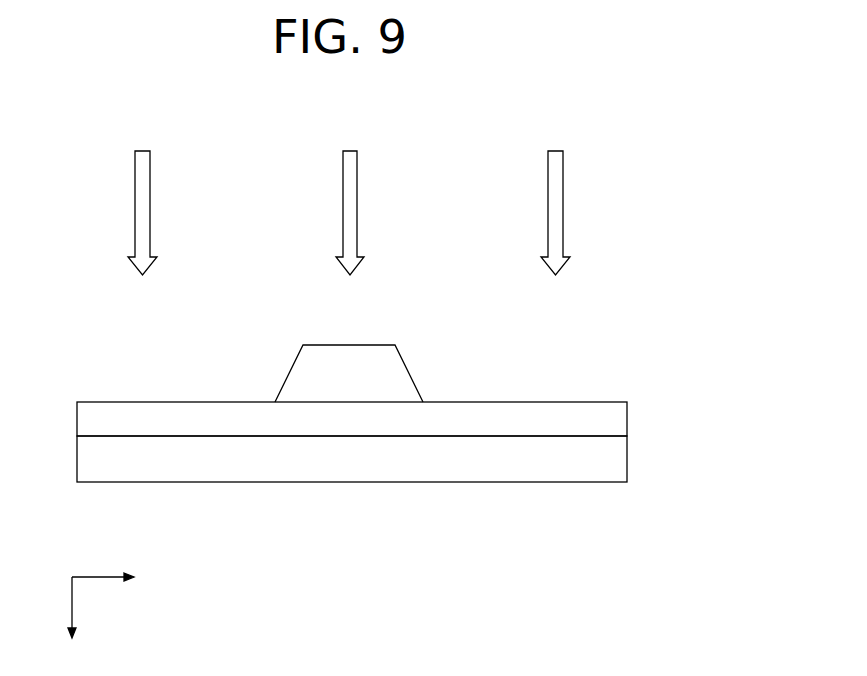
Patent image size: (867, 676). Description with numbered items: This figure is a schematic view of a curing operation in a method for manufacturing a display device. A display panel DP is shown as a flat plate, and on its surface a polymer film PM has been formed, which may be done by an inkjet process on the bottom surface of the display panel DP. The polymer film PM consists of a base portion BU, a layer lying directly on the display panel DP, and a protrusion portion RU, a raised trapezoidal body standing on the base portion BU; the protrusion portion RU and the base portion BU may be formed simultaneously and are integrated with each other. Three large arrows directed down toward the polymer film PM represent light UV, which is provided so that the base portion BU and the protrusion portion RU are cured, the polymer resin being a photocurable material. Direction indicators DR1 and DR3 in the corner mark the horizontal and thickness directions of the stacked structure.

The light UV is at (563, 202).
The protrusion portion RU is at (393, 369).
The base portion BU is at (618, 418).
The display panel DP is at (618, 455).
The polymer film PM is at (700, 356).
The first direction DR1 is at (122, 578).
The third direction DR3 is at (70, 621).